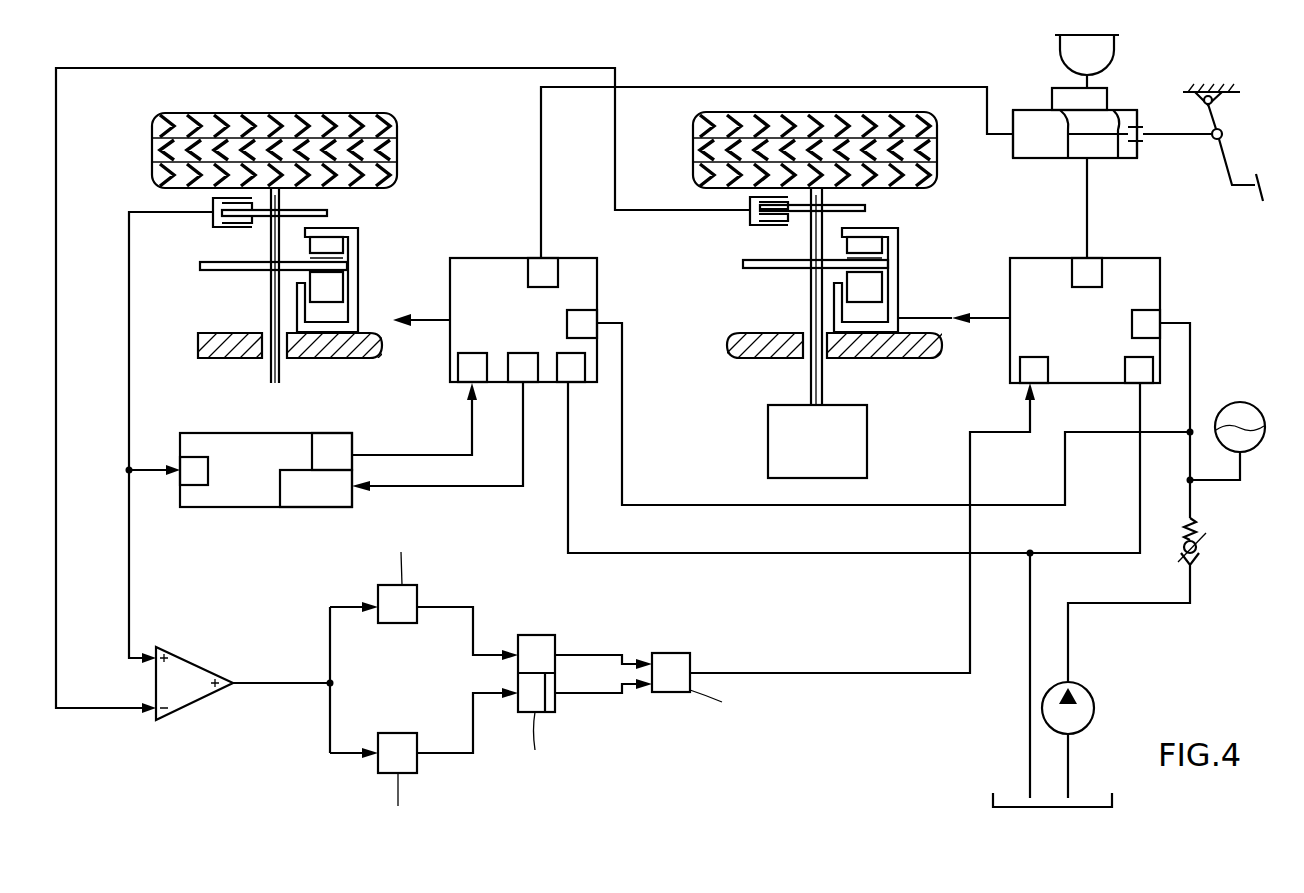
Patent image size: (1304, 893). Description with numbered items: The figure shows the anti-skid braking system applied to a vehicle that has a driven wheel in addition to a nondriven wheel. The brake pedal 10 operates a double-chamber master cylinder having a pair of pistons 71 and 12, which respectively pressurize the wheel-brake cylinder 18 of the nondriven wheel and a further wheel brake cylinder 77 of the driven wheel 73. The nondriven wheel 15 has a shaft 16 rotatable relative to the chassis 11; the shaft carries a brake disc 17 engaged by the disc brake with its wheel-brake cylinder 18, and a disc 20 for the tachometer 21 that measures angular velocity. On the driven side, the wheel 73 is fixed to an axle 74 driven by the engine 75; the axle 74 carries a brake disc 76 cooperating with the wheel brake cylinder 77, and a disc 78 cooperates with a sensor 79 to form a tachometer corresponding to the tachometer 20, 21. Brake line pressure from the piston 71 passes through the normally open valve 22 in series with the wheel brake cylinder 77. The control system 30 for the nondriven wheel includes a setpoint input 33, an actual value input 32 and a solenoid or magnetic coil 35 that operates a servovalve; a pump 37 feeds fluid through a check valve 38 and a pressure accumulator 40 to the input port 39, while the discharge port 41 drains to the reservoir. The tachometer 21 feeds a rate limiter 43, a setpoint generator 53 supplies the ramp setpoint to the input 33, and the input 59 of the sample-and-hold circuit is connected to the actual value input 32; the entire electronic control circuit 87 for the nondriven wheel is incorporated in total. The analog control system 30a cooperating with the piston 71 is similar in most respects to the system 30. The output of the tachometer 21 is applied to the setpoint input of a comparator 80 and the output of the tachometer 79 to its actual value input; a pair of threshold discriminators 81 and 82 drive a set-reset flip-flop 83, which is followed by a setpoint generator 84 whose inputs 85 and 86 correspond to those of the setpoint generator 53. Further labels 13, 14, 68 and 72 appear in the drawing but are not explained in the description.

The brake pedal 10 is at (1262, 183).
The chassis 11 is at (360, 355).
The master cylinder piston 12 is at (1068, 158).
The master cylinder chamber 13 is at (1013, 158).
The brake fluid reservoir 14 is at (1105, 56).
The wheel 15 is at (386, 138).
The axle or shaft 16 is at (271, 297).
The brake disc 17 is at (200, 266).
The wheel-brake cylinder 18 is at (335, 318).
The disc 20 is at (327, 213).
The angular velocity-measuring instrument 21 is at (213, 219).
The normally open valve 22 is at (815, 187).
The control system 30 is at (523, 320).
The analog control system 30a is at (1085, 320).
The actual value input 32 is at (445, 422).
The setpoint input 33 is at (419, 404).
The solenoid or magnetic coil 35 is at (1034, 370).
The pump 37 is at (1086, 710).
The check valve 38 is at (1198, 546).
The input port 39 is at (855, 455).
The pressure accumulator 40 is at (1241, 405).
The discharge port 41 is at (878, 414).
The rate limiter 43 is at (194, 471).
The setpoint generator 53 is at (332, 451).
The input of sample-and-hold circuit 59 is at (316, 488).
The electronic control input 68 is at (316, 488).
The master cylinder piston 71 is at (1118, 160).
The pressure line to control unit 72 is at (1089, 238).
The driven wheel 73 is at (930, 182).
The axle 74 is at (823, 392).
The engine 75 is at (868, 455).
The brake disc 76 is at (748, 267).
The wheel brake cylinder 77 is at (876, 312).
The disc 78 is at (865, 208).
The sensor 79 is at (758, 223).
The comparator 80 is at (190, 668).
The threshold discriminator 81 is at (398, 623).
The threshold discriminator 82 is at (398, 733).
The flip-flop 83 is at (536, 635).
The set-point generator 84 is at (680, 662).
The input 85 is at (632, 660).
The input 86 is at (630, 692).
The electronic control circuit 87 is at (266, 510).